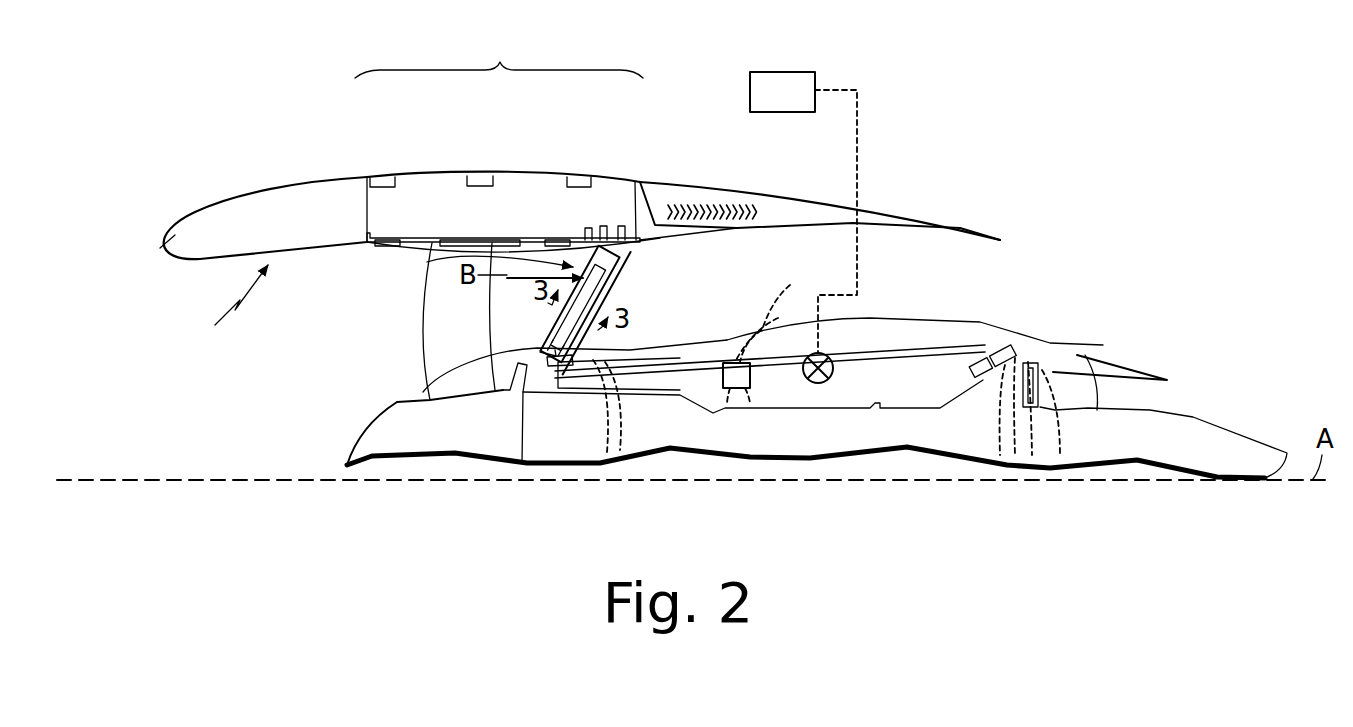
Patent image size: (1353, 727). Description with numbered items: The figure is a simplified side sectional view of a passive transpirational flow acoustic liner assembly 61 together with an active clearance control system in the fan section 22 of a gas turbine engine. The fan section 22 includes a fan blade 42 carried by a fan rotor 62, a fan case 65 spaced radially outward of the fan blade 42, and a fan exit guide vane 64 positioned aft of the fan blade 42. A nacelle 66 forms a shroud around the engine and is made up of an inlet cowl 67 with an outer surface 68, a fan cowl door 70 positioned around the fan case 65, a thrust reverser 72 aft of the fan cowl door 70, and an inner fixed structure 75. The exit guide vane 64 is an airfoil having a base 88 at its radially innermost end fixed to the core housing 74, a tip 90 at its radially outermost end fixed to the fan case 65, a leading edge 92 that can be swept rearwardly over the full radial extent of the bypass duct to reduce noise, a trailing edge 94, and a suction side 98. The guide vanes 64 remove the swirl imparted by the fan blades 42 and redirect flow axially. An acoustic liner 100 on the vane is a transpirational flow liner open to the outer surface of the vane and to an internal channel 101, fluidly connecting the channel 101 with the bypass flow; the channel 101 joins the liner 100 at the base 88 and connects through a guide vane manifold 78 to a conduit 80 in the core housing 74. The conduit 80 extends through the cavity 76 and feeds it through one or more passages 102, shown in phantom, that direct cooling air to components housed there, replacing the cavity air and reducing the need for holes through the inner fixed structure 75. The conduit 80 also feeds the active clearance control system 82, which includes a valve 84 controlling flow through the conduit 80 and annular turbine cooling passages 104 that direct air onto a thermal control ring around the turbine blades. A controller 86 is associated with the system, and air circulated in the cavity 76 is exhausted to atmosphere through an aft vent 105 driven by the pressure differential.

The fan section 22 is at (499, 54).
The fan blade 42 is at (454, 358).
The passive transpirational flow acoustic liner assembly 61 is at (613, 222).
The fan rotor 62 is at (383, 437).
The fan exit guide vane 64 is at (548, 350).
The fan case 65 is at (497, 237).
The nacelle 66 is at (224, 309).
The inlet cowl 67 is at (168, 247).
The outer surface 68 is at (248, 190).
The fan cowl door 70 is at (532, 186).
The thrust reverser 72 is at (712, 200).
The core housing 74 is at (680, 336).
The inner fixed structure 75 is at (853, 320).
The cavity 76 is at (840, 392).
The guide vane manifold 78 is at (548, 368).
The conduit 80 is at (638, 390).
The active clearance control system 82 is at (982, 345).
The valve 84 is at (830, 356).
The controller 86 is at (803, 212).
The base 88 is at (428, 393).
The tip 90 is at (590, 230).
The leading edge 92 is at (483, 263).
The trailing edge 94 is at (646, 248).
The suction side 98 is at (610, 293).
The acoustic liner 100 is at (597, 280).
The channel 101 is at (590, 352).
The passages 102 is at (769, 329).
The turbine cooling passages 104 is at (1030, 362).
The aft vent 105 is at (1102, 350).